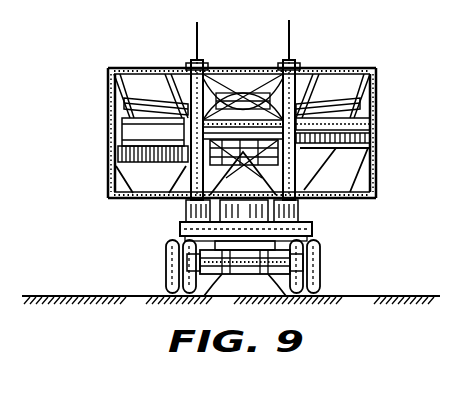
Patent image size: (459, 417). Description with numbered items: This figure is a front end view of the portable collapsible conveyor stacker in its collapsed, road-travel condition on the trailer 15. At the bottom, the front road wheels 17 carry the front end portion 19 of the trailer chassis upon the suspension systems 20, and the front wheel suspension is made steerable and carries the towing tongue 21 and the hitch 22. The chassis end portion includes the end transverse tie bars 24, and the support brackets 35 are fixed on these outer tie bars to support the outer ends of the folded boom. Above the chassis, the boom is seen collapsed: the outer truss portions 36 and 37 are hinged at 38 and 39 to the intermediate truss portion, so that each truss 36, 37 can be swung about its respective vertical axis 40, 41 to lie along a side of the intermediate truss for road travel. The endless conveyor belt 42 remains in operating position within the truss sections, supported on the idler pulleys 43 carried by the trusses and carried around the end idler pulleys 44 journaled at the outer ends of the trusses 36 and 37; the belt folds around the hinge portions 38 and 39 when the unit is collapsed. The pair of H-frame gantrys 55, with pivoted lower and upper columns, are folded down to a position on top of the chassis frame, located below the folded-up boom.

The trailer 15 is at (179, 228).
The front road wheels 17 is at (186, 269).
The end portion of the trailer chassis 19 is at (313, 228).
The suspension systems 20 is at (272, 296).
The towing tongue 21 is at (313, 246).
The hitch 22 is at (245, 274).
The end transverse tie bars 24 is at (166, 249).
The support brackets 35 is at (186, 209).
The outer truss portion 36 is at (110, 158).
The outer truss portion 37 is at (380, 160).
The hinge 38 is at (193, 63).
The hinge 39 is at (291, 63).
The vertical axis 40 is at (197, 34).
The vertical axis 41 is at (289, 32).
The endless conveyor belt 42 is at (171, 107).
The idler pulleys 43 is at (268, 98).
The end idler pulleys 44 is at (129, 161).
The gantrys 55 is at (243, 206).